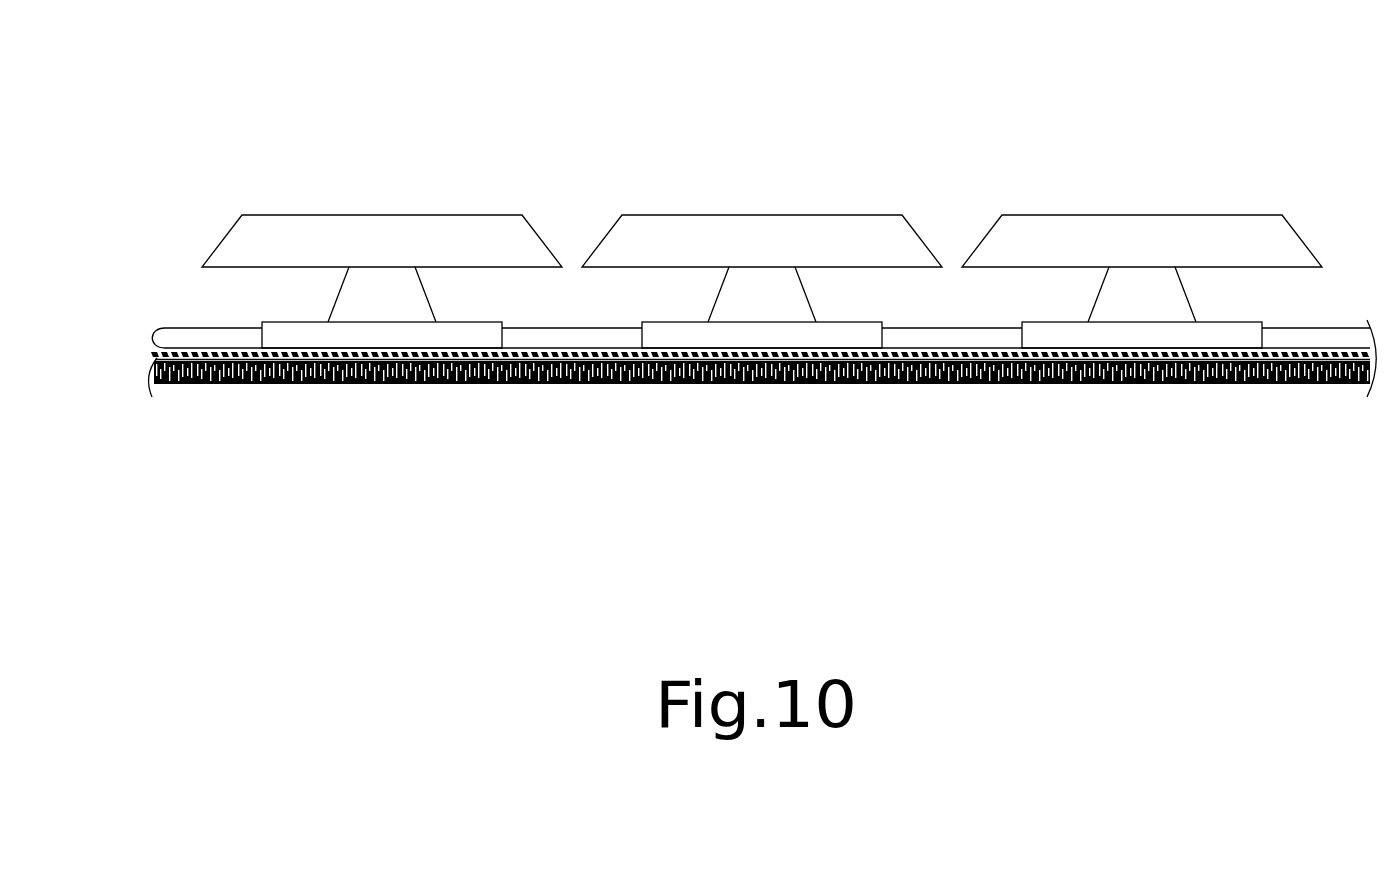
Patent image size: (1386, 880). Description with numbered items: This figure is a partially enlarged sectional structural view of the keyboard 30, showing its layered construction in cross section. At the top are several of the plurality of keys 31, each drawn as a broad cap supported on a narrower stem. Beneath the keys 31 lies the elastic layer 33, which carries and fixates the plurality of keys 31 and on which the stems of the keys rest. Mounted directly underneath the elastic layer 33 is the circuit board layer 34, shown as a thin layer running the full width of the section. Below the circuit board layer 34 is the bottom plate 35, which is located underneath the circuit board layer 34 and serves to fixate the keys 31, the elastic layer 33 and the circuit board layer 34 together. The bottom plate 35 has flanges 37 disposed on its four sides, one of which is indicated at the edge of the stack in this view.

The keyboard 30 is at (1082, 155).
The keys 31 is at (470, 225).
The elastic layer 33 is at (165, 330).
The circuit board layer 34 is at (150, 358).
The bottom plate 35 is at (150, 375).
The flanges 37 is at (1340, 330).